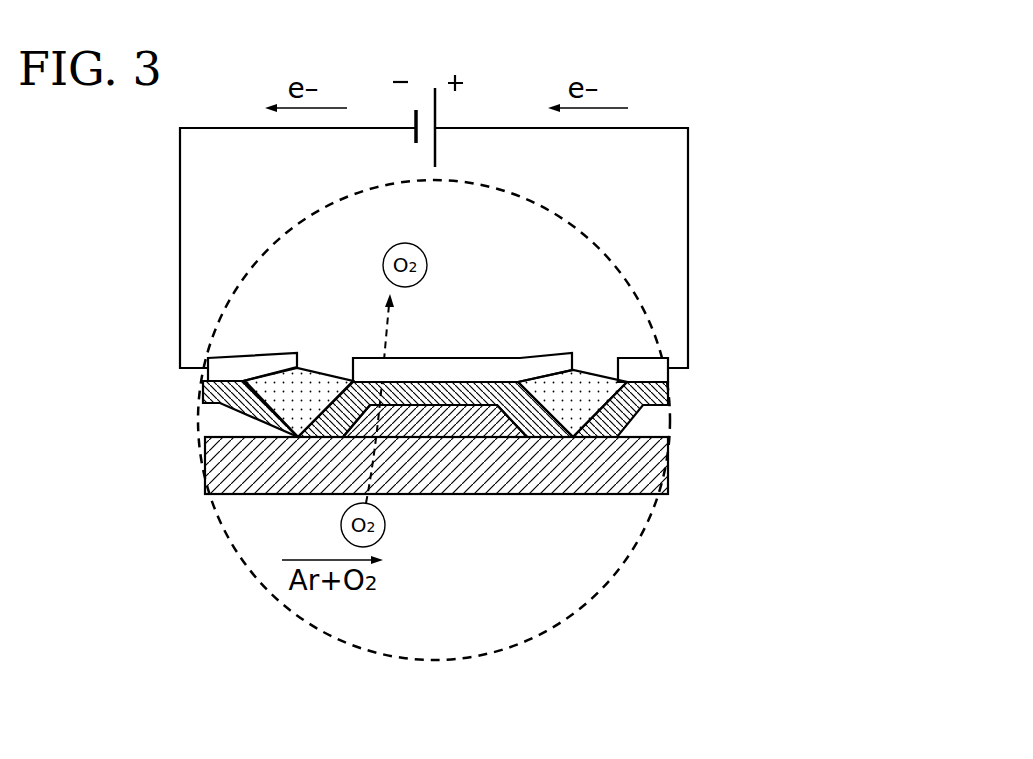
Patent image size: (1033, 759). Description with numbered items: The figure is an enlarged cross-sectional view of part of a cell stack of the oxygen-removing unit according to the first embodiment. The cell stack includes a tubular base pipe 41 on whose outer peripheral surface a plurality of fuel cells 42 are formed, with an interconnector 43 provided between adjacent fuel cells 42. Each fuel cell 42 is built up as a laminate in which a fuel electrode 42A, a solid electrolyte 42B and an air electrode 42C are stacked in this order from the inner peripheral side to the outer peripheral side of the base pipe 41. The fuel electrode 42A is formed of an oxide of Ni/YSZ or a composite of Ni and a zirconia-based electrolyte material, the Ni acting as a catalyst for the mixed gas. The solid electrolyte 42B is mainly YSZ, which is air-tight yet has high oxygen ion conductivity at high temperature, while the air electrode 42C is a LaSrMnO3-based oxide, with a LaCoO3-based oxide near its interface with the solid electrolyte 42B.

The base pipe 41 is at (643, 465).
The fuel cell 42 is at (510, 378).
The fuel electrode 42A is at (478, 424).
The solid electrolyte 42B is at (460, 387).
The air electrode 42C is at (363, 368).
The interconnector 43 is at (282, 402).